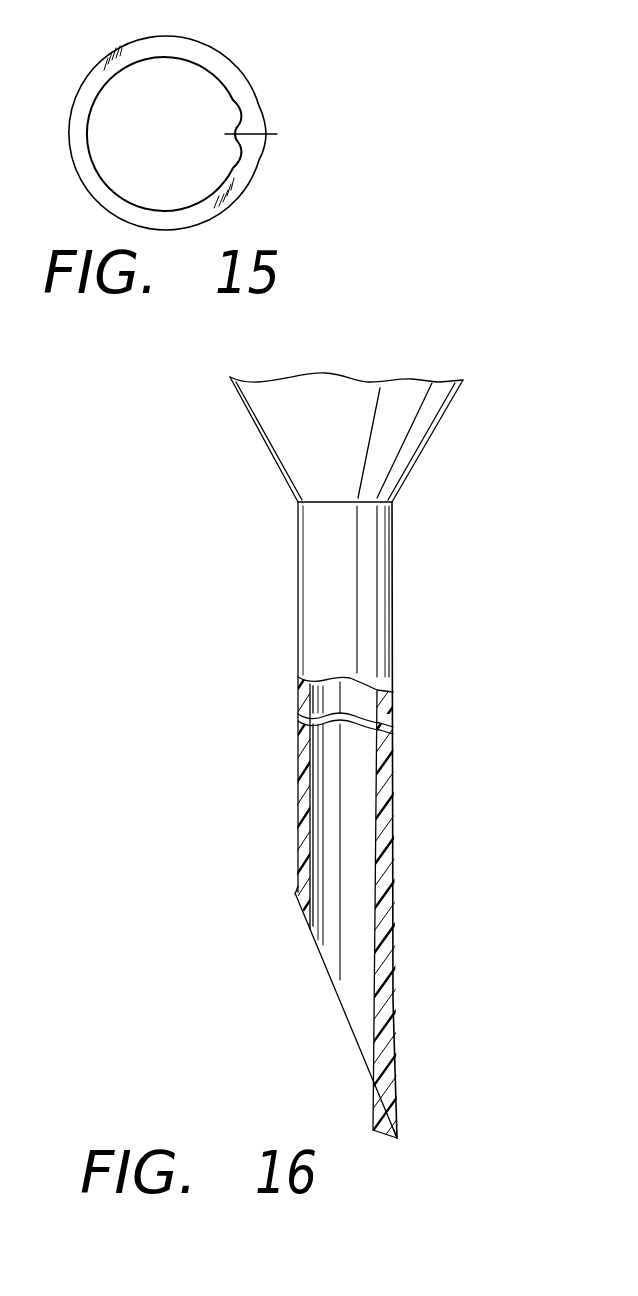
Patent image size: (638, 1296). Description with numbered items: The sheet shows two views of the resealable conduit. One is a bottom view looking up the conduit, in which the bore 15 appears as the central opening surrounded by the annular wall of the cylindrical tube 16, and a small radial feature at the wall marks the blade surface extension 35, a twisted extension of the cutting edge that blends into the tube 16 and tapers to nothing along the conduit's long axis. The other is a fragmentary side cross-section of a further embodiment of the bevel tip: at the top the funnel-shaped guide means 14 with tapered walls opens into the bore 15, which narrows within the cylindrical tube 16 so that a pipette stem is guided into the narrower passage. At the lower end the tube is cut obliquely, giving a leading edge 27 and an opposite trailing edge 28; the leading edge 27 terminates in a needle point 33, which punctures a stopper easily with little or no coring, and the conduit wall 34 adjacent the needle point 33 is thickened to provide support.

In FIG. 16, the guide means 14 is at (437, 425).
In FIG. 15, the bore 15 is at (182, 121).
In FIG. 16, the bore 15 is at (348, 993).
In FIG. 15, the cylindrical tube 16 is at (212, 48).
In FIG. 16, the cylindrical tube 16 is at (390, 588).
In FIG. 16, the leading edge 27 is at (378, 1105).
In FIG. 16, the trailing edge 28 is at (303, 903).
In FIG. 16, the needle point 33 is at (395, 1142).
In FIG. 16, the conduit wall 34 is at (393, 1055).
In FIG. 15, the blade surface extension 35 is at (275, 136).